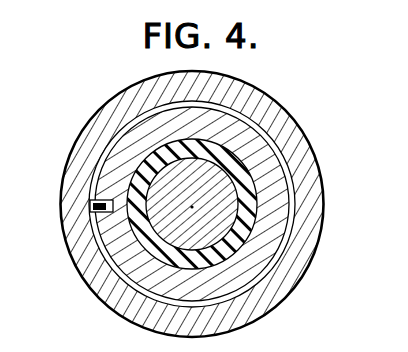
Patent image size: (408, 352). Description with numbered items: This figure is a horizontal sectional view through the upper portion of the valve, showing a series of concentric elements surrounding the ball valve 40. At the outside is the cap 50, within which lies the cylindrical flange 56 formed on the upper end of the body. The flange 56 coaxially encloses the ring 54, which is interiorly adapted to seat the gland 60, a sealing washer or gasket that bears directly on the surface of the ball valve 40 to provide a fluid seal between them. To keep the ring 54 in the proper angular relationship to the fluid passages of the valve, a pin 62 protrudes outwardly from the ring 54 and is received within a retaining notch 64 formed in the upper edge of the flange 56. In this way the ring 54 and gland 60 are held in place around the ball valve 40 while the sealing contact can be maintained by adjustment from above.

The ball valve 40 is at (224, 219).
The cap 50 is at (300, 167).
The ring 54 is at (270, 190).
The cylindrical flange 56 is at (118, 135).
The gland 60 is at (230, 162).
The pin 62 is at (92, 211).
The retaining notch 64 is at (92, 197).